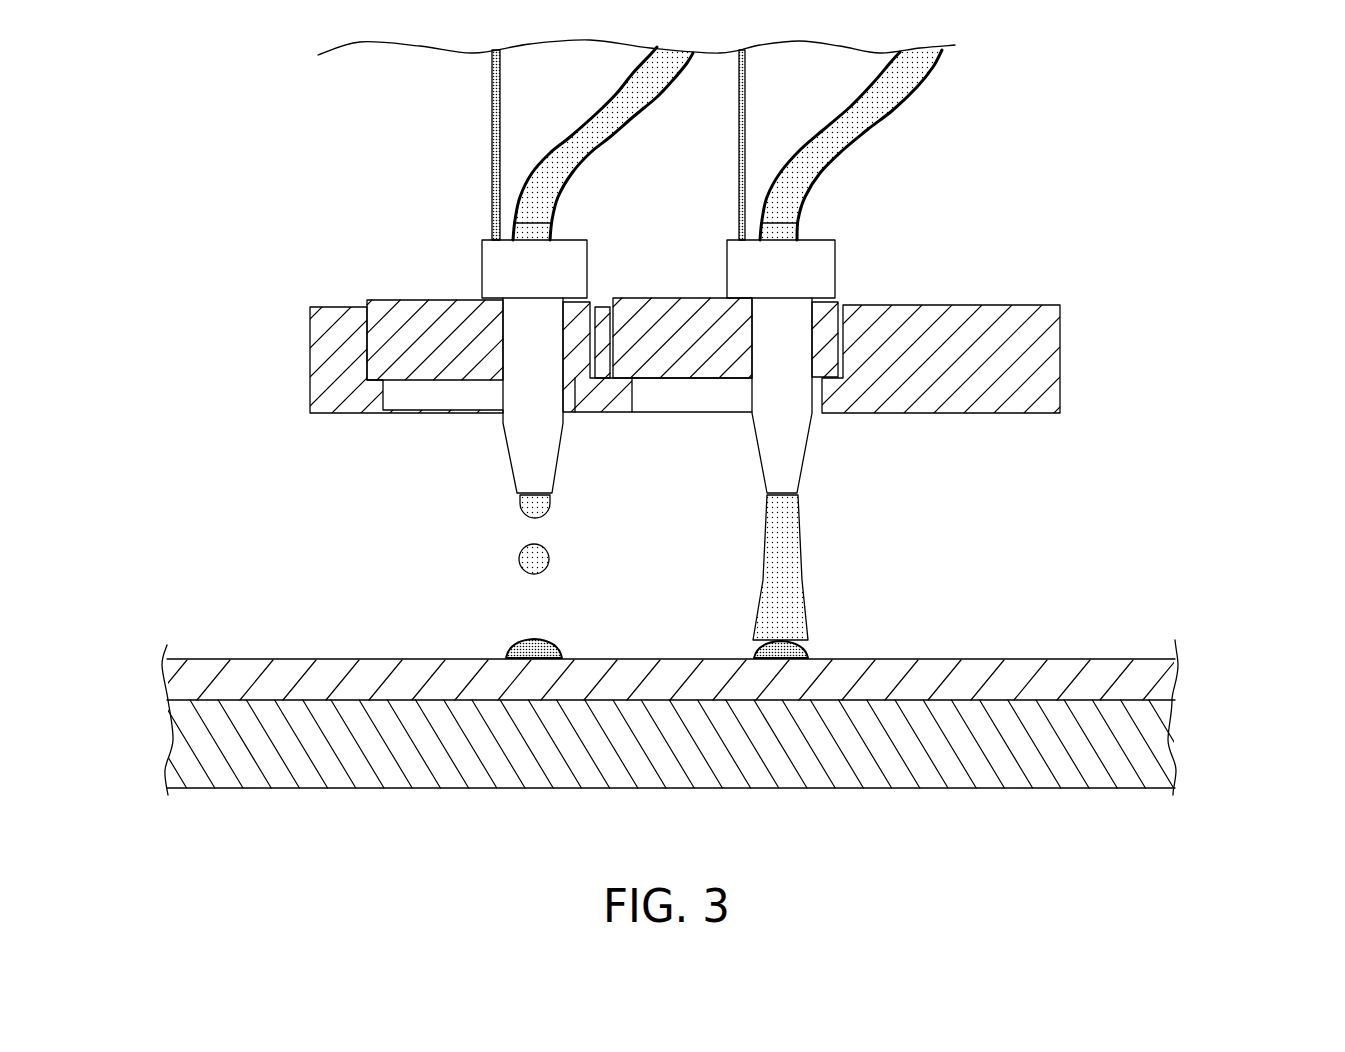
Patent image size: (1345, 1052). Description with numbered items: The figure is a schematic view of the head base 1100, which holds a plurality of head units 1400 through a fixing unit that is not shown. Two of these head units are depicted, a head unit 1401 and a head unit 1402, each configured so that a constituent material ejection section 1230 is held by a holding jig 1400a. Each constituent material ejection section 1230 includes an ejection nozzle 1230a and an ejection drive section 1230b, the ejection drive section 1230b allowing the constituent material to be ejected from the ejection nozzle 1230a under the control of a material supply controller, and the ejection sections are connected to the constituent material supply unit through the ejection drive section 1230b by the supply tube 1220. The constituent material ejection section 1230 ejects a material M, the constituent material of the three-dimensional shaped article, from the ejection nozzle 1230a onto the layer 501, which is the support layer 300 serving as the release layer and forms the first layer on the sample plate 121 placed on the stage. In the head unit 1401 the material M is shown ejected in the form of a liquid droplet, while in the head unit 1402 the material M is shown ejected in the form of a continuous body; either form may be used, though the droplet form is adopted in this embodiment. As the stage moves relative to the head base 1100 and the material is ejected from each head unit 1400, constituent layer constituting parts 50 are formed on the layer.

The supply tube 1220 is at (900, 102).
The constituent material ejection section 1230 is at (373, 348).
The ejection nozzle 1230a is at (530, 415).
The ejection drive section 1230b is at (507, 273).
The head unit 1400 is at (620, 299).
The head unit 1401 is at (580, 344).
The head unit 1402 is at (807, 265).
The holding jig 1400a is at (385, 350).
The head base 1100 is at (1063, 345).
The material M is at (548, 557).
The constituent layer constituting part 50 is at (750, 653).
The layer 501 is at (719, 680).
The support layer 300 is at (1160, 667).
The sample plate 121 is at (1160, 725).